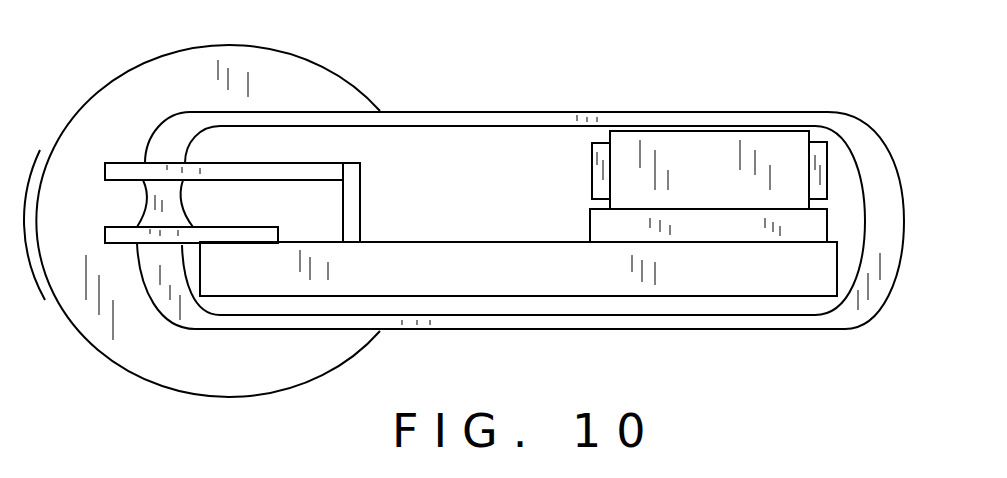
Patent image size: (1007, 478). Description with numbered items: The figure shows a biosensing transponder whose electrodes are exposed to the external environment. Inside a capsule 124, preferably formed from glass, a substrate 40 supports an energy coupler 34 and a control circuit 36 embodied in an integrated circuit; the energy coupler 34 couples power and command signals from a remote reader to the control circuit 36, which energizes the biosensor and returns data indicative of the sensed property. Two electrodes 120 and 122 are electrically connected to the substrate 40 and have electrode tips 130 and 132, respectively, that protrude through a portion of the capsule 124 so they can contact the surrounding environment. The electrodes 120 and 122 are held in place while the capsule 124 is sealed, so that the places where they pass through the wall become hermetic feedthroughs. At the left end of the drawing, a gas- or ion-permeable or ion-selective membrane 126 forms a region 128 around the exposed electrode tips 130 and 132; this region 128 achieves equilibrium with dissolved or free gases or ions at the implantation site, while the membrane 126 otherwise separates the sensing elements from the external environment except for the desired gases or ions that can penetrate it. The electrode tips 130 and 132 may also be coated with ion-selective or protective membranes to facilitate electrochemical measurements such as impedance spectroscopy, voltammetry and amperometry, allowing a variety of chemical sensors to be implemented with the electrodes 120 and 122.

The energy coupler 34 is at (810, 135).
The control circuit 36 is at (827, 220).
The substrate 40 is at (688, 296).
The electrode 120 is at (360, 208).
The electrode 122 is at (243, 227).
The capsule 124 is at (507, 330).
The membrane 126 is at (92, 345).
The region 128 is at (190, 355).
The electrode tip 130 is at (127, 163).
The electrode tip 132 is at (100, 227).